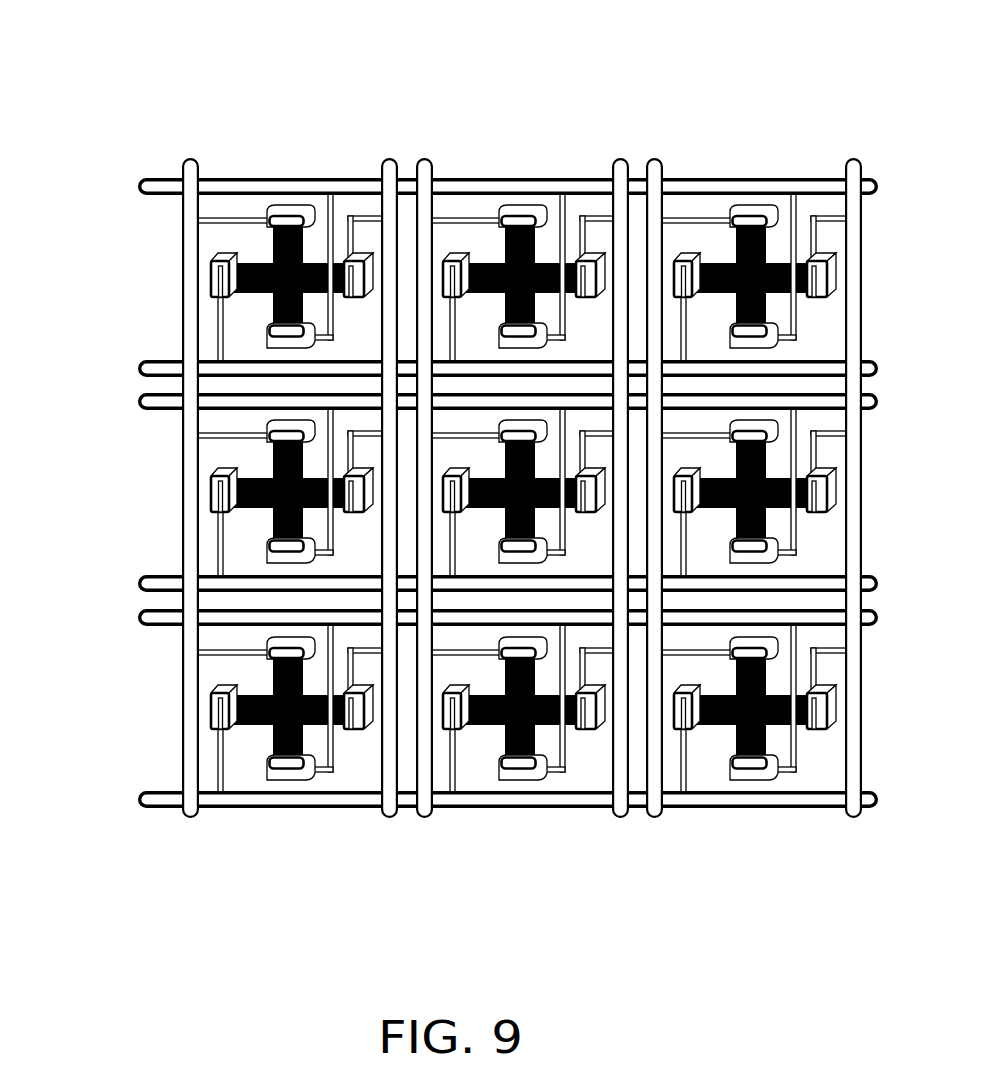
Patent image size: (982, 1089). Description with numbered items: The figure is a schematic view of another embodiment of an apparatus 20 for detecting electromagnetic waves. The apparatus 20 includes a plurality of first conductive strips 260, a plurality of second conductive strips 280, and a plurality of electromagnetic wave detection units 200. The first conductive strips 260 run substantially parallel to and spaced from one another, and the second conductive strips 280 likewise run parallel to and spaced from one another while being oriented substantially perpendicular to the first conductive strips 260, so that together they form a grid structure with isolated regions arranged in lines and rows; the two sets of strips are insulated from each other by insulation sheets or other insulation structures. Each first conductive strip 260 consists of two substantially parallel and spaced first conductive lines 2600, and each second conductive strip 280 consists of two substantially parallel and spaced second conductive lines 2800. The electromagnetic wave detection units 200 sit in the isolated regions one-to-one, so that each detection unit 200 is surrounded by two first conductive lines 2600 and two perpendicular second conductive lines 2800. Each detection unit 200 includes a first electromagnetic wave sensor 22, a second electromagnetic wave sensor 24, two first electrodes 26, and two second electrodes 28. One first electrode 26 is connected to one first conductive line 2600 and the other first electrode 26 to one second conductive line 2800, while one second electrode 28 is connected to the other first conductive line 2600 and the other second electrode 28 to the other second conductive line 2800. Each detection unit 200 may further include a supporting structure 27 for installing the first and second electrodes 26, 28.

The apparatus for detecting electromagnetic waves 20 is at (485, 36).
The first electromagnetic wave sensor 22 is at (273, 244).
The second electromagnetic wave sensor 24 is at (250, 298).
The first electrode 26 is at (268, 338).
The supporting structure 27 is at (361, 250).
The second electrode 28 is at (213, 265).
The electromagnetic wave detection unit 200 is at (762, 204).
The first conductive strip 260 is at (449, 596).
The first conductive line 2600 is at (166, 574).
The second conductive strip 280 is at (620, 451).
The second conductive line 2800 is at (687, 119).